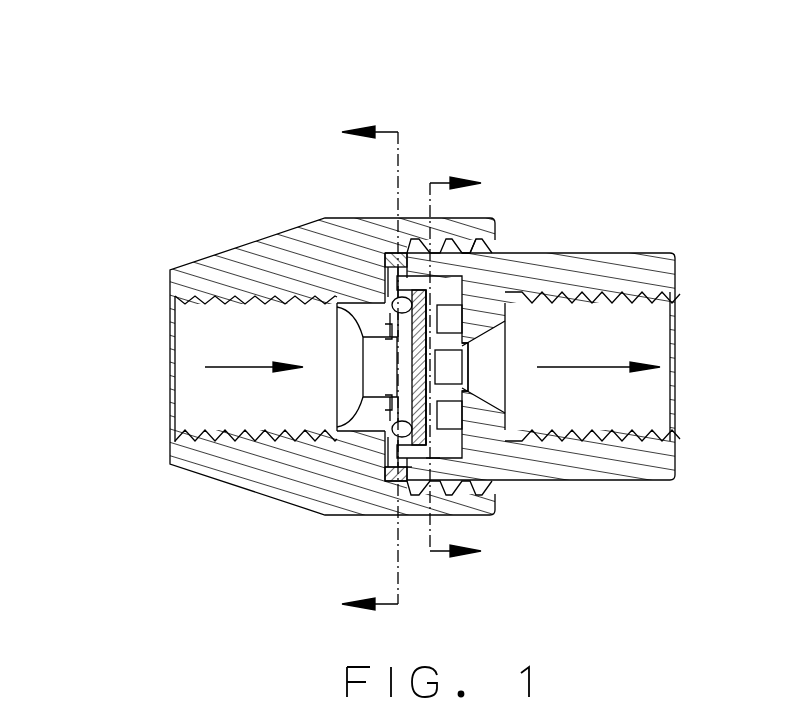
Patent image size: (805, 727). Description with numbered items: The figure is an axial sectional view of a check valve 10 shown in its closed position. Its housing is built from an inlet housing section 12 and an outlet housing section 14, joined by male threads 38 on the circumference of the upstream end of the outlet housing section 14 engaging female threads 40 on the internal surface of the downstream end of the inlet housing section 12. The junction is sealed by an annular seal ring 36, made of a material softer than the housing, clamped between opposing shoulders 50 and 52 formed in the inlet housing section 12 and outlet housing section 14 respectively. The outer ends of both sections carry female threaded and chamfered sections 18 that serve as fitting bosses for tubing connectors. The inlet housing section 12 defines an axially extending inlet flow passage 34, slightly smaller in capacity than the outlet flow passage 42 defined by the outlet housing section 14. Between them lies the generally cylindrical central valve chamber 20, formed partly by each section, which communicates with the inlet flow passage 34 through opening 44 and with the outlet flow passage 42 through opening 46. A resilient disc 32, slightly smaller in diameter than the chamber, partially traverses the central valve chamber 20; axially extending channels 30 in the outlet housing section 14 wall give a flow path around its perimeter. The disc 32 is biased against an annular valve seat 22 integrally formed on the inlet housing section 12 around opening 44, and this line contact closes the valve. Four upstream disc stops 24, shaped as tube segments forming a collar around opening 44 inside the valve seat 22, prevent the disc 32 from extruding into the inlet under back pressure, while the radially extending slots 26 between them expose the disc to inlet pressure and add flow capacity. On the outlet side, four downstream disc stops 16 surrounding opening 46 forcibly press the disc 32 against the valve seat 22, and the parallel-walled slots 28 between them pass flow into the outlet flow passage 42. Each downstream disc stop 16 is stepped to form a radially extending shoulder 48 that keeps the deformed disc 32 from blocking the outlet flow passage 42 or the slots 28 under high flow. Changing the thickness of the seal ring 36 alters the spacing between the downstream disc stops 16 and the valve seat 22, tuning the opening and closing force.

The check valve 10 is at (595, 113).
The inlet housing section 12 is at (190, 265).
The outlet housing section 14 is at (667, 268).
The downstream disc stops 16 is at (445, 370).
The female threaded and chamfered sections 18 is at (623, 432).
The central valve chamber 20 is at (433, 437).
The annular valve seat 22 is at (398, 253).
The upstream disc stops 24 is at (400, 352).
The radially extending slots 26 is at (395, 412).
The slots 28 is at (453, 415).
The axially extending channels 30 is at (433, 482).
The disc 32 is at (421, 290).
The inlet flow passage 34 is at (392, 402).
The annular seal ring 36 is at (393, 482).
The male threads 38 is at (497, 236).
The female threads 40 is at (470, 232).
The outlet flow passage 42 is at (452, 362).
The opening 44 is at (388, 340).
The opening 46 is at (468, 343).
The radially extending shoulder 48 is at (465, 311).
The shoulder 50 is at (383, 475).
The shoulder 52 is at (420, 478).